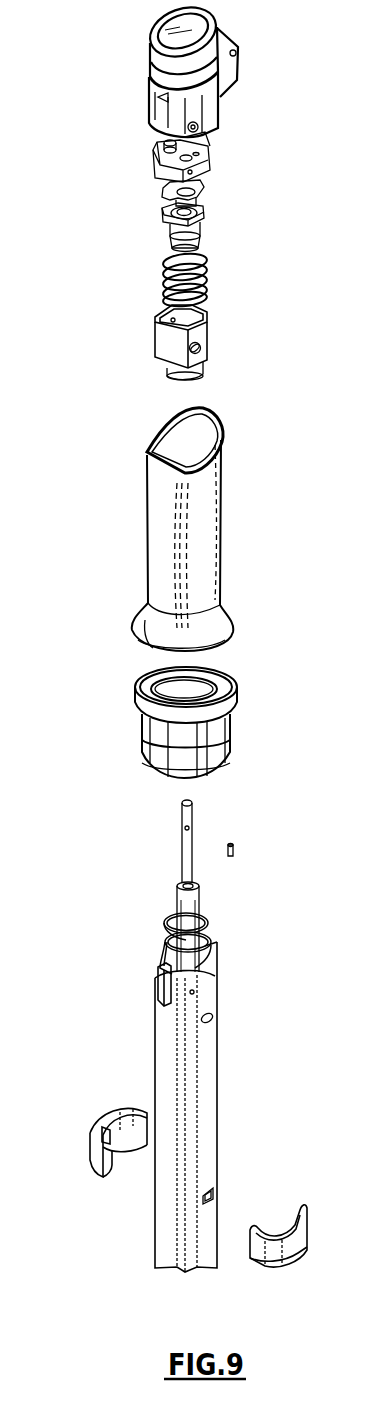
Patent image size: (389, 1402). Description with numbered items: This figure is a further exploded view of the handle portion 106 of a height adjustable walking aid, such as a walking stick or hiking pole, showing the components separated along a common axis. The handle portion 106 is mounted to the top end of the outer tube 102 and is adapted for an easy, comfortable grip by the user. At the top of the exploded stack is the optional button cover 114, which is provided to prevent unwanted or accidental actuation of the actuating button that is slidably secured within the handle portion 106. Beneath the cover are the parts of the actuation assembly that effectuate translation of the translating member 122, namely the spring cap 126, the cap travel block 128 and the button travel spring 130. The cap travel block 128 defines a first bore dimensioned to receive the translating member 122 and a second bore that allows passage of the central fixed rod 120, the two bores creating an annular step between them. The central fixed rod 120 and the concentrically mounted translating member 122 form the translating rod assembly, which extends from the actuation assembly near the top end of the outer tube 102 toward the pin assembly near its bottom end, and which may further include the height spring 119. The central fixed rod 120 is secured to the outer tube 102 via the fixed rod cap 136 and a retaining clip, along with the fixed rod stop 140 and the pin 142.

The outer tube 102 is at (210, 1108).
The handle portion 106 is at (108, 328).
The button cover 114 is at (156, 45).
The height spring 119 is at (212, 926).
The central fixed rod 120 is at (196, 821).
The translating member 122 is at (200, 898).
The spring cap 126 is at (206, 336).
The cap travel block 128 is at (207, 230).
The button travel spring 130 is at (208, 278).
The fixed rod cap 136 is at (205, 162).
The fixed rod stop 140 is at (203, 190).
The pin 142 is at (236, 851).